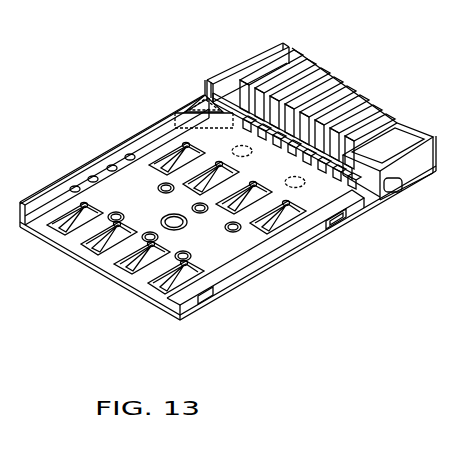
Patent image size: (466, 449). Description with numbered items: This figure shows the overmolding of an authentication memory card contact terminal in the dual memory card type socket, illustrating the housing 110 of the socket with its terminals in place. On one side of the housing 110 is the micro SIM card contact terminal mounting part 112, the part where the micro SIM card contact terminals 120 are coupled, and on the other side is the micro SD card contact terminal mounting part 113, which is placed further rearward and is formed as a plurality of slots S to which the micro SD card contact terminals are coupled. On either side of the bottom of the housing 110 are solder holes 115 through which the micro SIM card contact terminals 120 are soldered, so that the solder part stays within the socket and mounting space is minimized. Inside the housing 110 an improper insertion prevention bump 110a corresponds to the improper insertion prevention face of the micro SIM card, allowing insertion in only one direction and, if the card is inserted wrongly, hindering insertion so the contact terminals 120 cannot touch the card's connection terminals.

The housing 110 is at (112, 146).
The improper insertion prevention bump 110a is at (190, 118).
The micro SIM card contact terminal mounting part 112 is at (338, 229).
The micro SD card contact terminal mounting part 113 is at (318, 109).
The solder holes 115 is at (80, 189).
The micro SIM card contact terminal 120 is at (103, 263).
The slots S is at (294, 78).